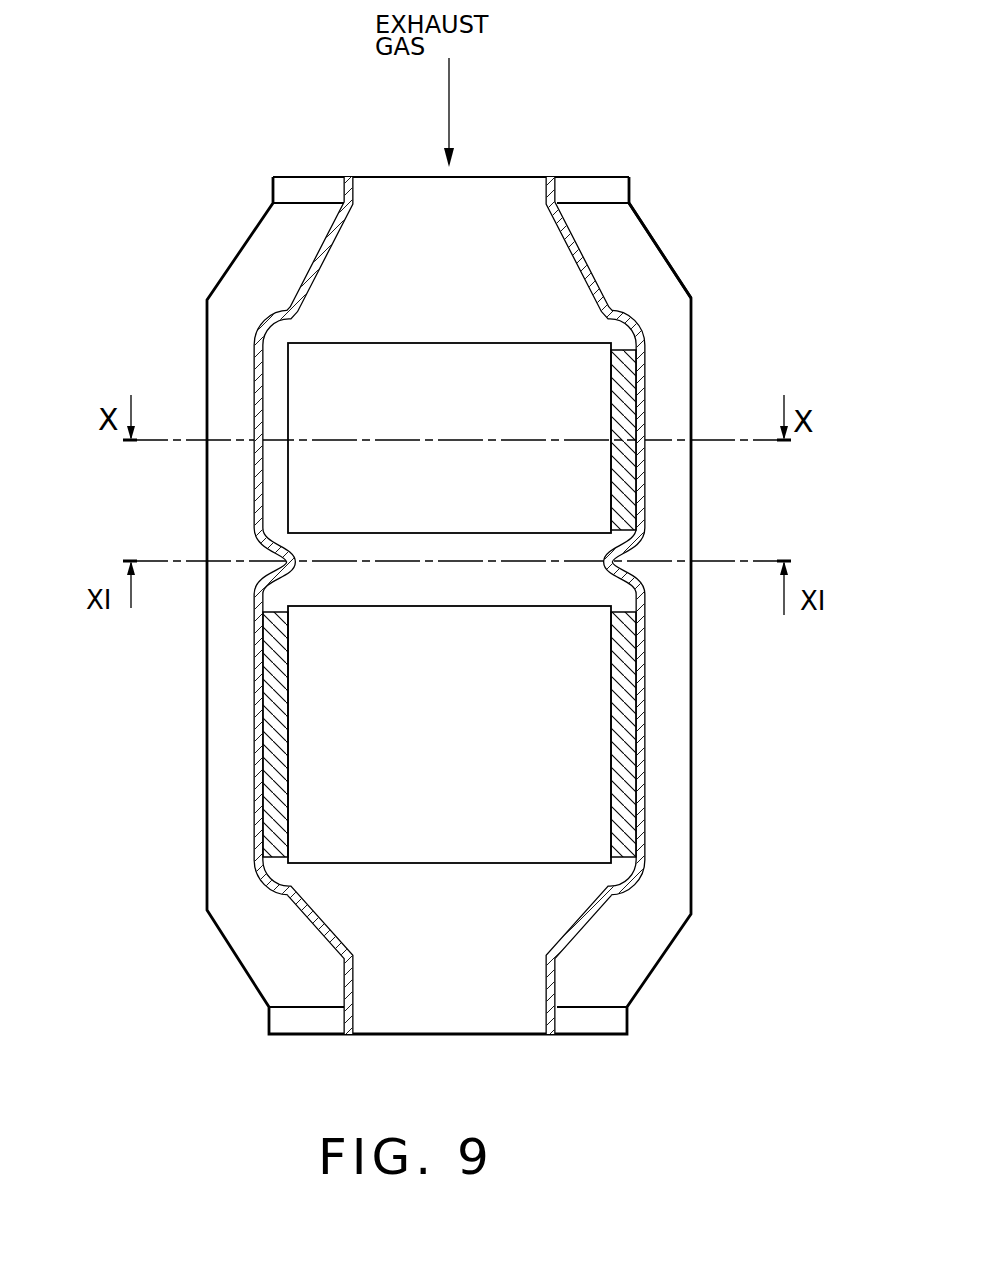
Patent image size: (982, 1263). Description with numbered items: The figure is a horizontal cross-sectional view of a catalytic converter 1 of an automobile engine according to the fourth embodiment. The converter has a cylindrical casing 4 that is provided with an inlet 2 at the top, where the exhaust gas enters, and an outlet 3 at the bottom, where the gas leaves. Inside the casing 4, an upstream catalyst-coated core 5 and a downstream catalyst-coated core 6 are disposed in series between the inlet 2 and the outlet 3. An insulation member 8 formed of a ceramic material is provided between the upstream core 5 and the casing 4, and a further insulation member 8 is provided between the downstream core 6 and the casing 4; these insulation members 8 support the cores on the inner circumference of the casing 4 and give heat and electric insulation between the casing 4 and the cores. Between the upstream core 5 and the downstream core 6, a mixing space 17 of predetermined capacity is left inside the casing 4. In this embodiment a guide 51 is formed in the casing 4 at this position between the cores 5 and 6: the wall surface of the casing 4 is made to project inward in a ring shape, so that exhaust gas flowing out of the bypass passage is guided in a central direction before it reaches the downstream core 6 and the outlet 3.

The catalytic converter 1 is at (672, 237).
The inlet 2 is at (512, 212).
The outlet 3 is at (513, 1008).
The casing 4 is at (243, 940).
The upstream catalyst-coated core 5 is at (573, 375).
The downstream catalyst-coated core 6 is at (577, 692).
The insulation member 8 is at (632, 407).
The mixing space 17 is at (325, 593).
The guide 51 is at (637, 600).